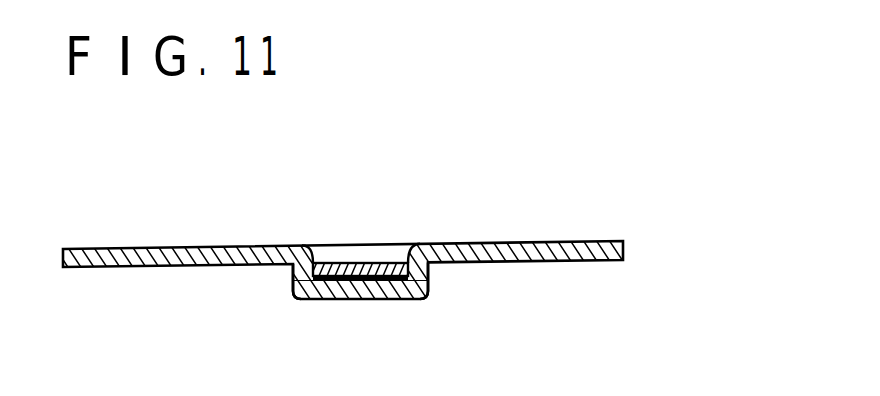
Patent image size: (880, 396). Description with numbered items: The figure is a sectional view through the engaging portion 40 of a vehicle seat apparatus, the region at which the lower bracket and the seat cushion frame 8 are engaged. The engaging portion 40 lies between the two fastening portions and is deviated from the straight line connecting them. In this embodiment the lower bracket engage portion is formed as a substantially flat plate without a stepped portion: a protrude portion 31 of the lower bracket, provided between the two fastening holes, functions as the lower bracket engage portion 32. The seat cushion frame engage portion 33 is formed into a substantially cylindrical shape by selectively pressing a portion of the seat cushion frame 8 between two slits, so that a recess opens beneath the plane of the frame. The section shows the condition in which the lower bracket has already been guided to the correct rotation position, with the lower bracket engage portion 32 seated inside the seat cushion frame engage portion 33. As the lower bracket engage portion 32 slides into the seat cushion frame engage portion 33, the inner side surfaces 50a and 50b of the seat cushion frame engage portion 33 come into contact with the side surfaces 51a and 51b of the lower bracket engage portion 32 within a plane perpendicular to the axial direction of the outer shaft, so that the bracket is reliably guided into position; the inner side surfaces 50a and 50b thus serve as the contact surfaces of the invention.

The seat cushion frame 8 is at (150, 247).
The protrude portion 31 is at (348, 252).
The lower bracket engage portion 32 is at (340, 281).
The seat cushion frame engage portion 33 is at (368, 297).
The engaging portion 40 is at (376, 207).
The inner side surface 50a is at (311, 256).
The inner side surface 50b is at (406, 257).
The side surface 51a is at (293, 283).
The side surface 51b is at (428, 283).